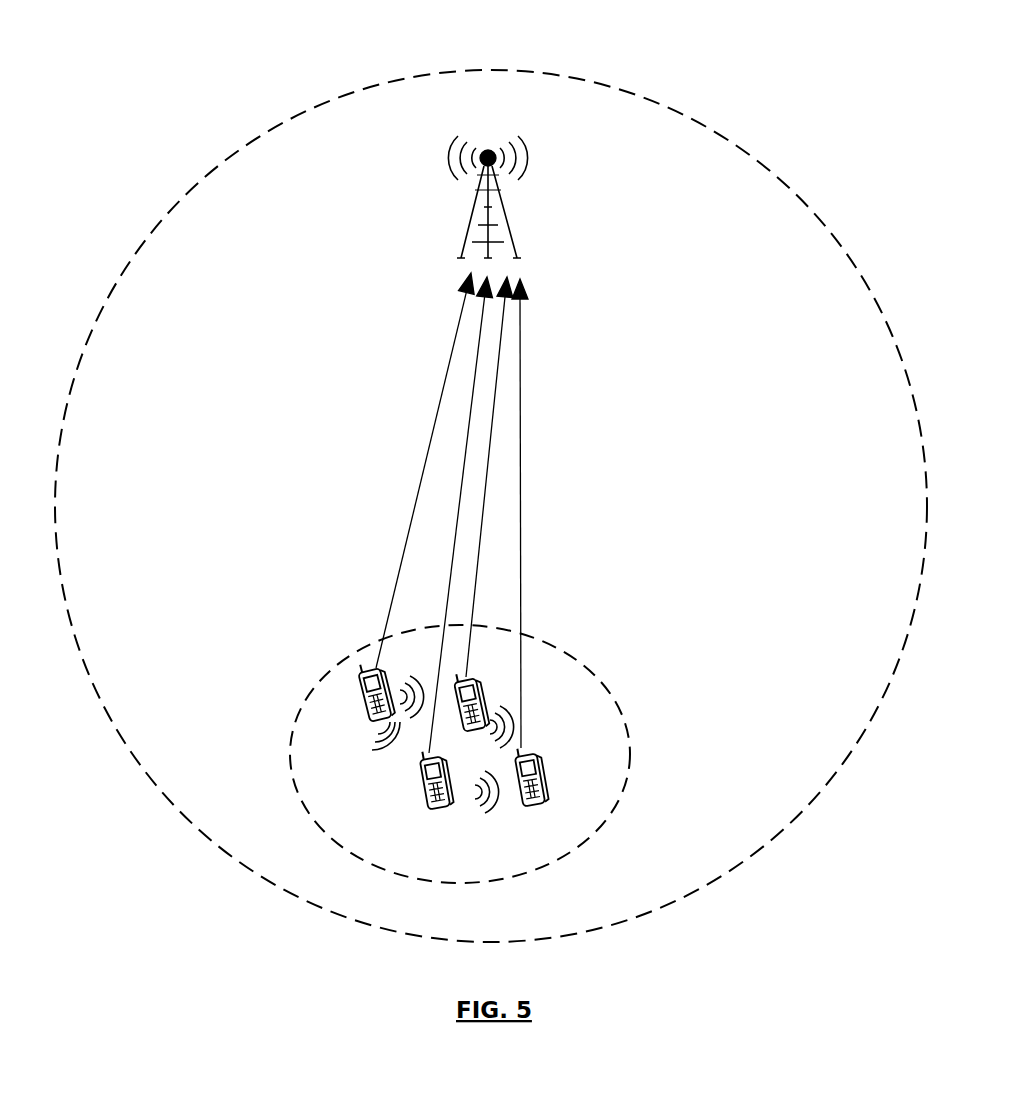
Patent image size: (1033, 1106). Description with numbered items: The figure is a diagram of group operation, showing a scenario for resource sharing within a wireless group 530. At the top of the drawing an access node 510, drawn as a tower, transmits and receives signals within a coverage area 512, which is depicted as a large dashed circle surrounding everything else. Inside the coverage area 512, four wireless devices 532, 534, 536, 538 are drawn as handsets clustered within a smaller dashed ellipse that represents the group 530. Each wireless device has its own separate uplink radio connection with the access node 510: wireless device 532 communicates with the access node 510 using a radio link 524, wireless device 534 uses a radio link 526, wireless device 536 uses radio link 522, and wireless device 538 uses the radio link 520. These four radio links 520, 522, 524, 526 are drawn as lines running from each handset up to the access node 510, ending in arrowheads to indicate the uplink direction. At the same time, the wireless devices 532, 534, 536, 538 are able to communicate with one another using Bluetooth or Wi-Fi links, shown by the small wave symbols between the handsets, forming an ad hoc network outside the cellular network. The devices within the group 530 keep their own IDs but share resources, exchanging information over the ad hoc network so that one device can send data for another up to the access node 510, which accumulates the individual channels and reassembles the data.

The access node 510 is at (531, 157).
The coverage area 512 is at (853, 244).
The radio link 520 is at (409, 540).
The radio link 522 is at (447, 572).
The radio link 524 is at (477, 572).
The radio link 526 is at (520, 490).
The wireless group 530 is at (548, 642).
The wireless device 532 is at (459, 678).
The wireless device 534 is at (542, 757).
The wireless device 536 is at (445, 810).
The wireless device 538 is at (362, 715).